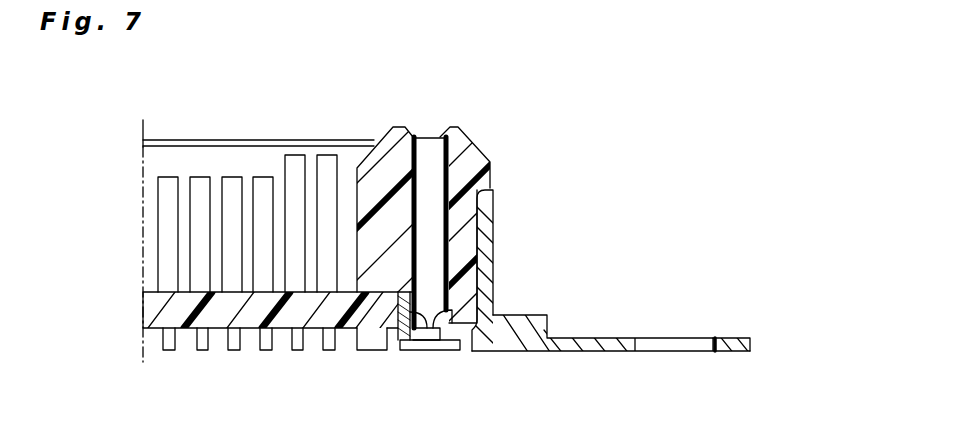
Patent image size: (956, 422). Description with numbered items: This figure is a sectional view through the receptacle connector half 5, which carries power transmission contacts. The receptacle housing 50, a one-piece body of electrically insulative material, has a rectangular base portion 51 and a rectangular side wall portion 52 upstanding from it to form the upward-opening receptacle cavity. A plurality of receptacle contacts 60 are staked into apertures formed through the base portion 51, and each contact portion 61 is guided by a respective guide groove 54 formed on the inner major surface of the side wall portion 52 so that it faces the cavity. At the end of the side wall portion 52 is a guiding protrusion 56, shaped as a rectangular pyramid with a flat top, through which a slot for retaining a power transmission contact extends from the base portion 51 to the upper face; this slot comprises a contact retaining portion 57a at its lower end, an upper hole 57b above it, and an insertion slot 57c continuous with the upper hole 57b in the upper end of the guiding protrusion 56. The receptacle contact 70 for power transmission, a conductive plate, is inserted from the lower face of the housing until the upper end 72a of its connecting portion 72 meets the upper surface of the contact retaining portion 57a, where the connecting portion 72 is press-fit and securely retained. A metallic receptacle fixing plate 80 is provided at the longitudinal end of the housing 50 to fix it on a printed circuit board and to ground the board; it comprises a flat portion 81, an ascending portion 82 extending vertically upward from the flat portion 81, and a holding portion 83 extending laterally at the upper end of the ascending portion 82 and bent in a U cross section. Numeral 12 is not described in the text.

The receptacle connector half 5 is at (578, 180).
The circuit board 12 is at (283, 140).
The receptacle housing 50 is at (498, 170).
The base portion 51 is at (160, 320).
The side wall portion 52 is at (199, 165).
The guide groove 54 is at (268, 282).
The guiding protrusion 56 is at (467, 127).
The contact retaining portion 57a is at (443, 342).
The upper hole 57b is at (418, 150).
The insertion slot 57c is at (407, 130).
The receptacle contact 60 is at (263, 175).
The contact portion 61 is at (262, 248).
The receptacle contact for power transmission 70 is at (437, 167).
The connecting portion 72 is at (437, 331).
The upper end of connecting portion 72a is at (457, 291).
The receptacle fixing plate 80 is at (733, 334).
The flat portion 81 is at (608, 338).
The ascending portion 82 is at (488, 242).
The holding portion 83 is at (458, 214).